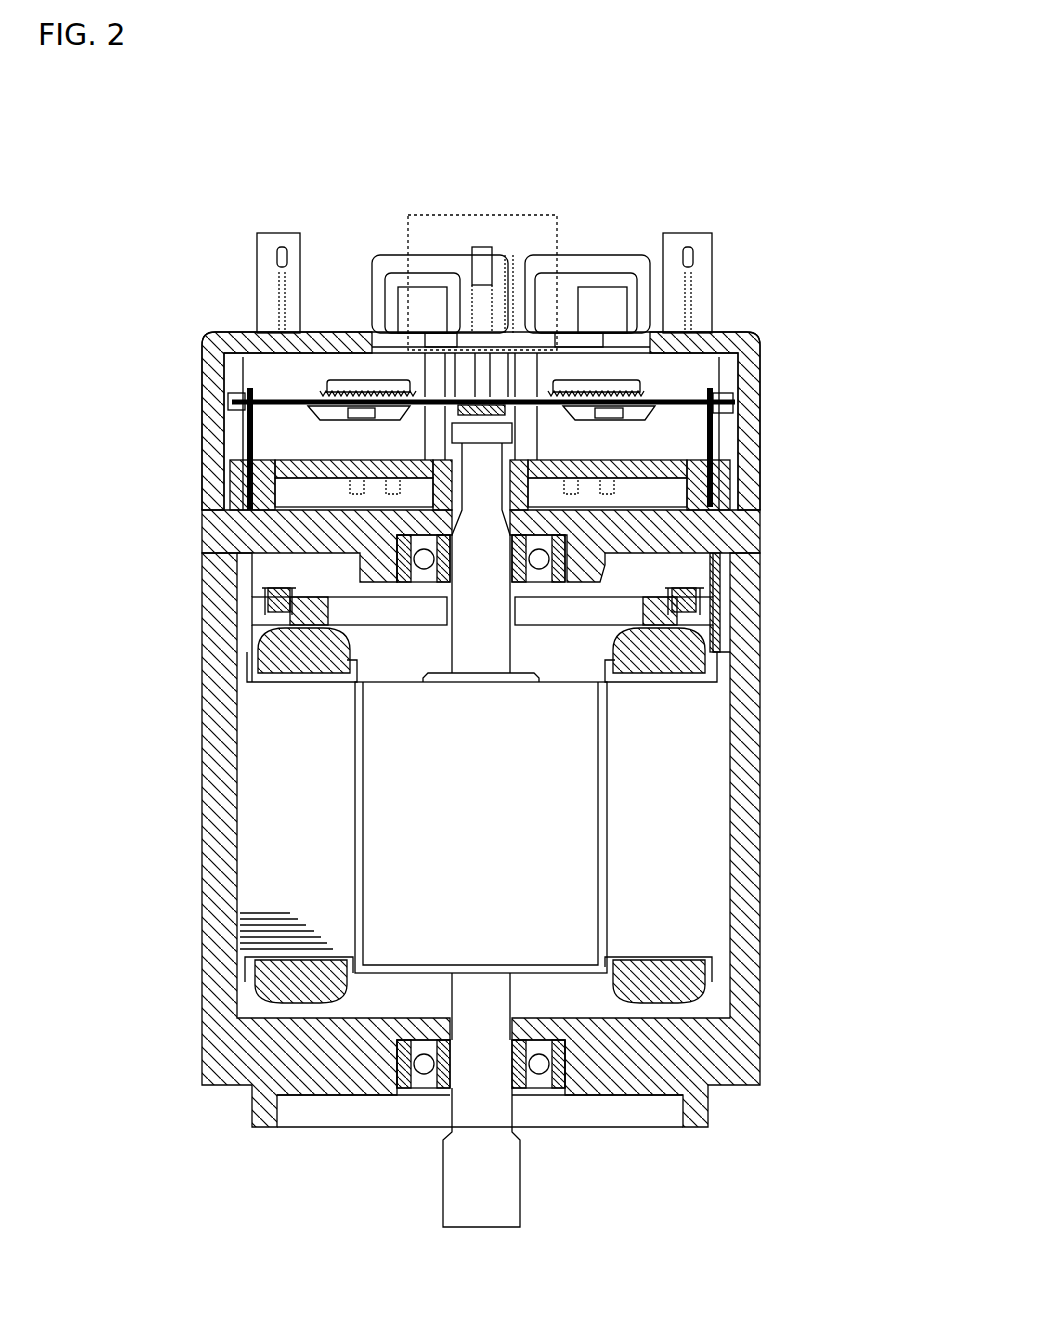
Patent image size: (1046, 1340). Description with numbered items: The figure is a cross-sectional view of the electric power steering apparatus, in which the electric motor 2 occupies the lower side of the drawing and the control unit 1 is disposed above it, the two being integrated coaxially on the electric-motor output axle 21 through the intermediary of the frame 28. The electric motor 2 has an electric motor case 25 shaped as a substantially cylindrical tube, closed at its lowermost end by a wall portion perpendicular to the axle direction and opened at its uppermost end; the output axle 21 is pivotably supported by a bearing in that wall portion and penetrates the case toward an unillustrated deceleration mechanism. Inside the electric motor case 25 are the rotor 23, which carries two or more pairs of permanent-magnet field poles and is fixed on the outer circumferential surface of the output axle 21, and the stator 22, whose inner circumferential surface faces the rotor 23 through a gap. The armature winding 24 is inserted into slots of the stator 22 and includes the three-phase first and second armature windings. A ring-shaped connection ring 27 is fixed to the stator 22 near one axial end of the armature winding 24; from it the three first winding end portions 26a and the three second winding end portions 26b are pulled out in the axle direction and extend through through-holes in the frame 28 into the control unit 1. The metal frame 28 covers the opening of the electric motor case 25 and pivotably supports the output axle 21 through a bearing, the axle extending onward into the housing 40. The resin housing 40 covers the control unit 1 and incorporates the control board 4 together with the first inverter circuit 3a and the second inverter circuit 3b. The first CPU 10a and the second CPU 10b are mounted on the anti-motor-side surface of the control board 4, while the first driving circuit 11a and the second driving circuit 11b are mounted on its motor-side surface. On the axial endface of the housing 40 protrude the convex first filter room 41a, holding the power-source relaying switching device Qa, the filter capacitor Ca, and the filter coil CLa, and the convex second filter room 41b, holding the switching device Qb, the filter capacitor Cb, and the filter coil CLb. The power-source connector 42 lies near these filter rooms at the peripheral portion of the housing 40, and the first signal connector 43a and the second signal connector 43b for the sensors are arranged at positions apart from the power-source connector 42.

The control unit 1 is at (195, 392).
The electric motor 2 is at (775, 917).
The first inverter circuit 3a is at (210, 592).
The second inverter circuit 3b is at (762, 520).
The control board 4 is at (762, 400).
The first CPU 10a is at (328, 382).
The second CPU 10b is at (642, 382).
The first driving circuit 11a is at (313, 403).
The second driving circuit 11b is at (762, 420).
The electric-motor output axle 21 is at (523, 1170).
The stator 22 is at (245, 883).
The rotor 23 is at (588, 847).
The armature winding 24 is at (258, 640).
The electric motor case 25 is at (202, 968).
The first winding end portion 26a is at (265, 597).
The second winding end portion 26b is at (762, 595).
The connection ring 27 is at (762, 653).
The frame 28 is at (202, 537).
The housing 40 is at (195, 422).
The first filter room 41a is at (375, 258).
The second filter room 41b is at (638, 262).
The power-source connector 42 is at (420, 216).
The first signal connector 43a is at (280, 233).
The second signal connector 43b is at (688, 237).
The filter capacitor Ca is at (398, 290).
The filter capacitor Cb is at (608, 288).
The power-source relaying switching device Qa is at (423, 302).
The power-source relaying switching device Qb is at (570, 300).
The filter coil CLa is at (425, 303).
The filter coil CLb is at (582, 283).